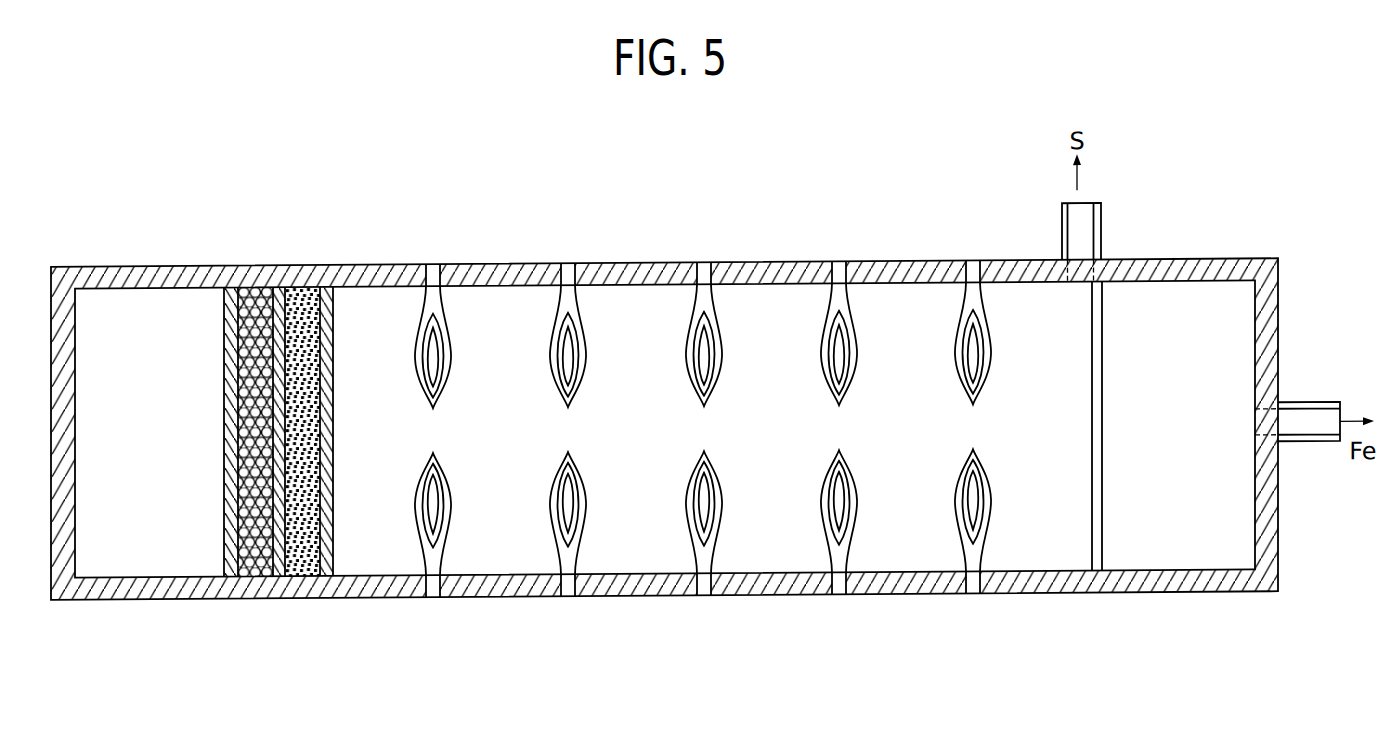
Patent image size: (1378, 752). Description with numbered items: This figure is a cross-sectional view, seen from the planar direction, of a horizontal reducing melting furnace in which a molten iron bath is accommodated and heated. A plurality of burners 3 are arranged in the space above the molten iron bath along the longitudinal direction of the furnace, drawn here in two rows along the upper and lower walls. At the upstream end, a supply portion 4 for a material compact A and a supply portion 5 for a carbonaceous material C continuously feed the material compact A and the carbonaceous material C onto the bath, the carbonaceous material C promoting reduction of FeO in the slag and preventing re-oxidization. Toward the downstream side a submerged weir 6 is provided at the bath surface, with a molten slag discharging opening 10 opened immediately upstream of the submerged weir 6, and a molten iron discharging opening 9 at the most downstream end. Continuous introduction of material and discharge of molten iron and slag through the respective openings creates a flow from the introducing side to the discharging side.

The burner 3 is at (977, 261).
The supply portion 4 is at (222, 307).
The supply portion 5 is at (333, 308).
The submerged weir 6 is at (1097, 413).
The molten iron discharging opening 9 is at (1317, 406).
The molten slag discharging opening 10 is at (1102, 229).
The material compact A is at (263, 575).
The carbonaceous material C is at (300, 290).